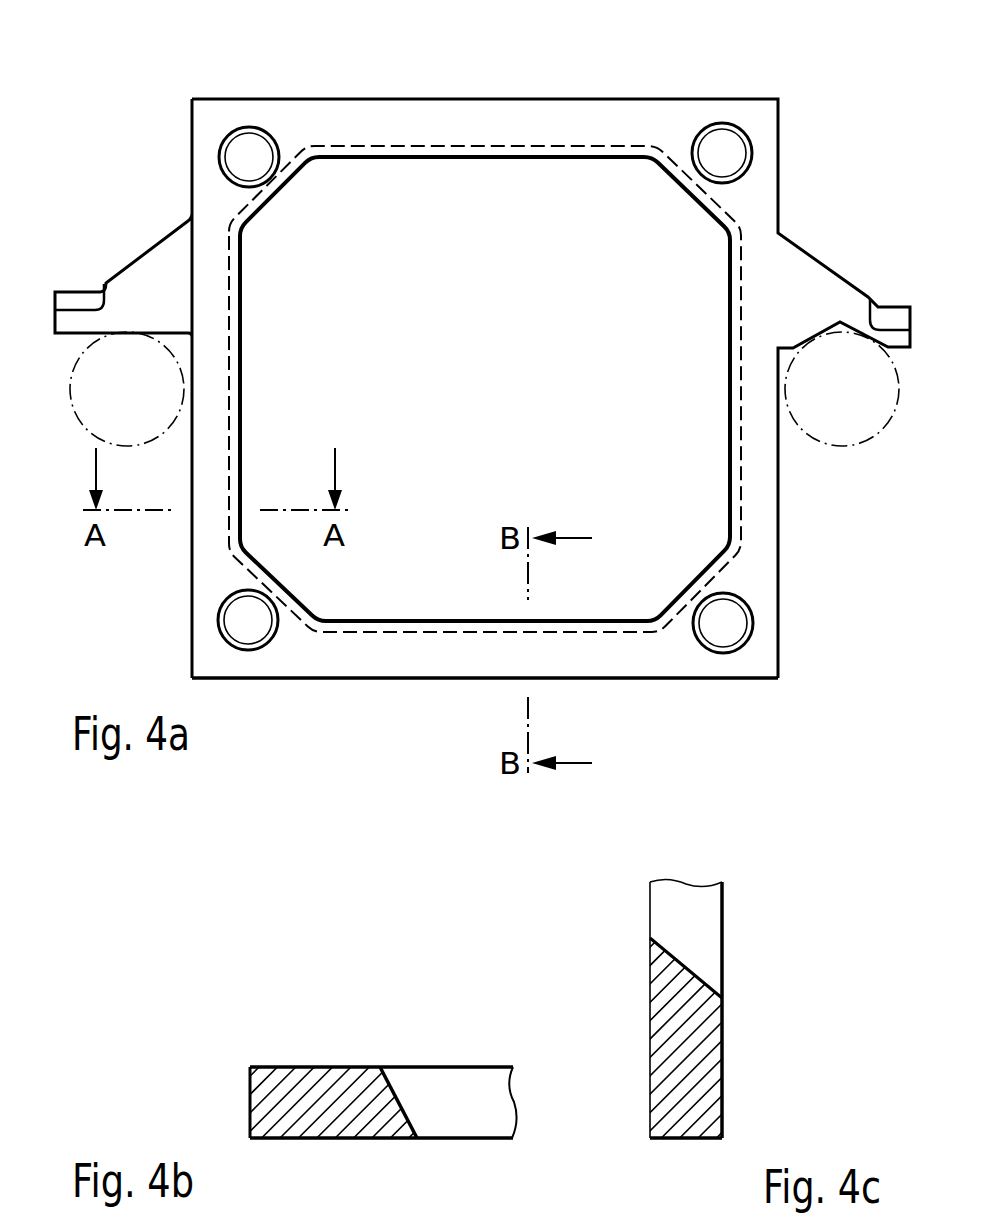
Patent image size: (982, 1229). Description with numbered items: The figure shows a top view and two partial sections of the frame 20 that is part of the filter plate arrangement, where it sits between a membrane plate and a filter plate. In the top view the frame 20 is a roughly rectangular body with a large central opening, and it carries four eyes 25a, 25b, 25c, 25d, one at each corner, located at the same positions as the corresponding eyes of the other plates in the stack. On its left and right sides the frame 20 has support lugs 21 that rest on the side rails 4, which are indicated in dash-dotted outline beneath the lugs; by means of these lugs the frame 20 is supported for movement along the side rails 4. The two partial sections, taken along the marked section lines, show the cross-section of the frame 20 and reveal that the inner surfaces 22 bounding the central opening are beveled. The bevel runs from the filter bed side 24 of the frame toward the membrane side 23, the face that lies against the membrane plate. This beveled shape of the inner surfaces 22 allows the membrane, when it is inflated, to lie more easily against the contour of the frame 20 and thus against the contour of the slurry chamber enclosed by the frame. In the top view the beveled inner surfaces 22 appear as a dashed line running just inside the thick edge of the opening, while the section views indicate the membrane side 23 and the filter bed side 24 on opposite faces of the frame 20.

In FIG. 4A, the frame 20 is at (656, 88).
In FIG. 4B, the frame 20 is at (263, 1100).
In FIG. 4C, the frame 20 is at (682, 1110).
In FIG. 4A, the support lugs 21 is at (129, 283).
In FIG. 4A, the inner surfaces 22 is at (402, 628).
In FIG. 4B, the inner surfaces 22 is at (397, 1088).
In FIG. 4C, the inner surfaces 22 is at (690, 970).
In FIG. 4A, the membrane side 23 is at (335, 655).
In FIG. 4B, the membrane side 23 is at (293, 1067).
In FIG. 4C, the membrane side 23 is at (722, 1043).
In FIG. 4A, the filter bed side 24 is at (422, 657).
In FIG. 4B, the filter bed side 24 is at (298, 1138).
In FIG. 4C, the filter bed side 24 is at (650, 1040).
In FIG. 4A, the eye 25a is at (730, 150).
In FIG. 4A, the eye 25b is at (240, 157).
In FIG. 4A, the eye 25c is at (237, 625).
In FIG. 4A, the eye 25d is at (731, 623).
In FIG. 4A, the side rail 4 is at (128, 443).